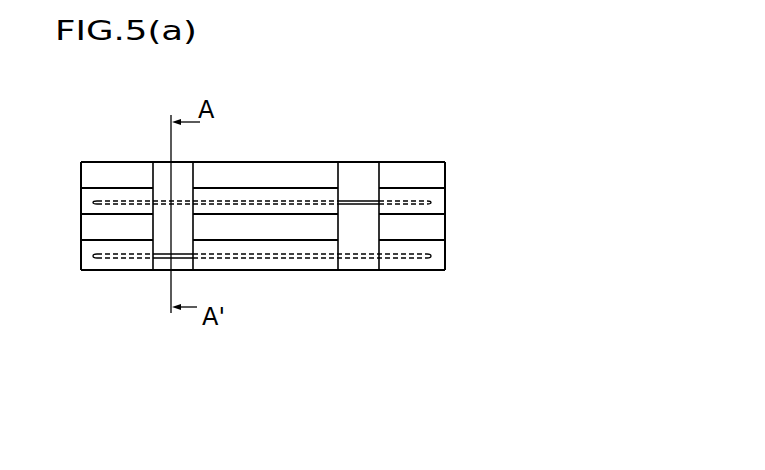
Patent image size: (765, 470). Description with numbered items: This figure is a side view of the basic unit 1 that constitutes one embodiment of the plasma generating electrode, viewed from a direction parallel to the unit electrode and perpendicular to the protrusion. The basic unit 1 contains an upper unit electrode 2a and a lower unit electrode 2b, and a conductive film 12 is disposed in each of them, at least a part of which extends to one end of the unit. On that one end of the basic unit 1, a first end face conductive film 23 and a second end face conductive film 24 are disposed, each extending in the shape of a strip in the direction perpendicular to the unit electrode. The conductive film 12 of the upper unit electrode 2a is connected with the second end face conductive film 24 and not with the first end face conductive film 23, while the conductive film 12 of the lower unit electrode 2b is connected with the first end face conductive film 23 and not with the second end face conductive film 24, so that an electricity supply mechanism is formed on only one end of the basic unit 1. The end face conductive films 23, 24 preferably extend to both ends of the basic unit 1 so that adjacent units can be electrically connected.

The basic unit 1 is at (482, 138).
The upper unit electrode 2a is at (306, 180).
The lower unit electrode 2b is at (288, 280).
The conductive film 12 is at (228, 200).
The first end face conductive film 23 is at (158, 163).
The second end face conductive film 24 is at (358, 177).